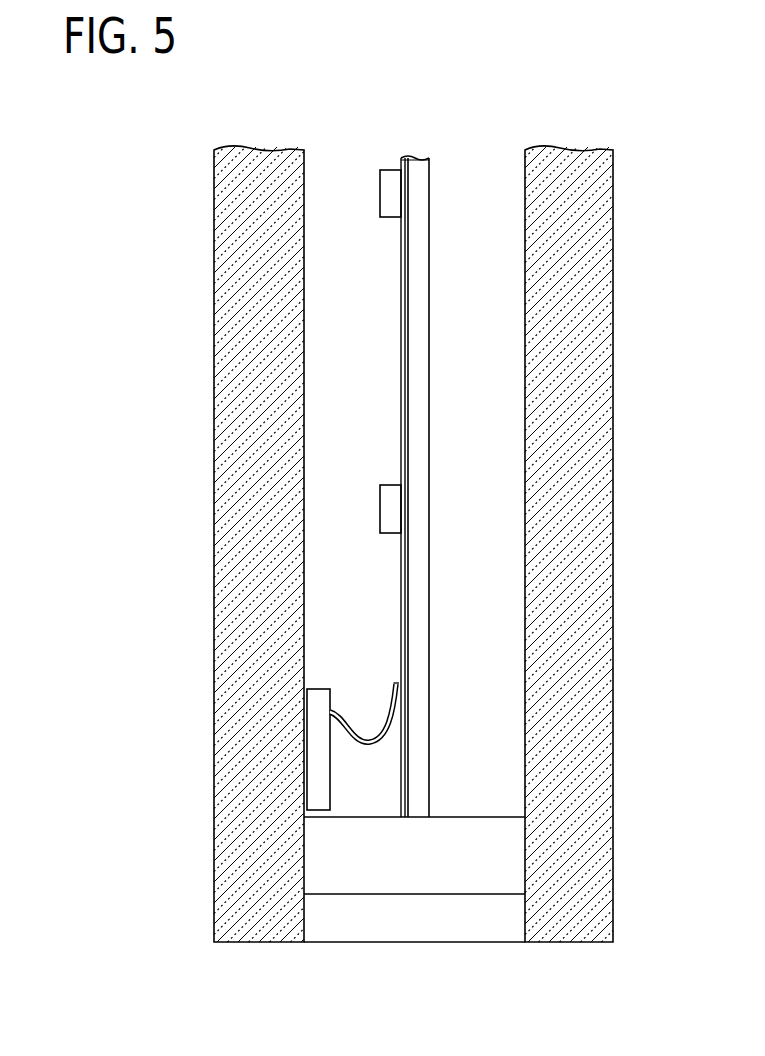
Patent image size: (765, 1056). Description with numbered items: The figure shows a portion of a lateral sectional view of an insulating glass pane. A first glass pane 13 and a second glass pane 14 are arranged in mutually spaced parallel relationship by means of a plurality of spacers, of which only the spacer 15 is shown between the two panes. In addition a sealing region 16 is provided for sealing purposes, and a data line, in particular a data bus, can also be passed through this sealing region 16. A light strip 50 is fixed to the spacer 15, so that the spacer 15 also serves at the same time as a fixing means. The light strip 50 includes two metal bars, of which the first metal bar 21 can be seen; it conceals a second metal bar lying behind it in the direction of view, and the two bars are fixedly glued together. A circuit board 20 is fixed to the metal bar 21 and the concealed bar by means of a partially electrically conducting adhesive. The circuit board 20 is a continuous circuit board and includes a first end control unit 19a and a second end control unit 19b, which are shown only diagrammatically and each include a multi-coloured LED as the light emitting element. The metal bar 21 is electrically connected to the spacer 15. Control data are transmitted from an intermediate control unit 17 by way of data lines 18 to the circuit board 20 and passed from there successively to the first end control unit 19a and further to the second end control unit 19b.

The first glass pane 13 is at (250, 925).
The second glass pane 14 is at (573, 923).
The spacer 15 is at (367, 880).
The sealing region 16 is at (476, 923).
The intermediate control unit 17 is at (318, 792).
The data lines 18 is at (330, 734).
The first end control unit 19a is at (362, 534).
The second end control unit 19b is at (363, 218).
The circuit board 20 is at (391, 149).
The metal bar 21 is at (444, 170).
The light strip 50 is at (419, 112).